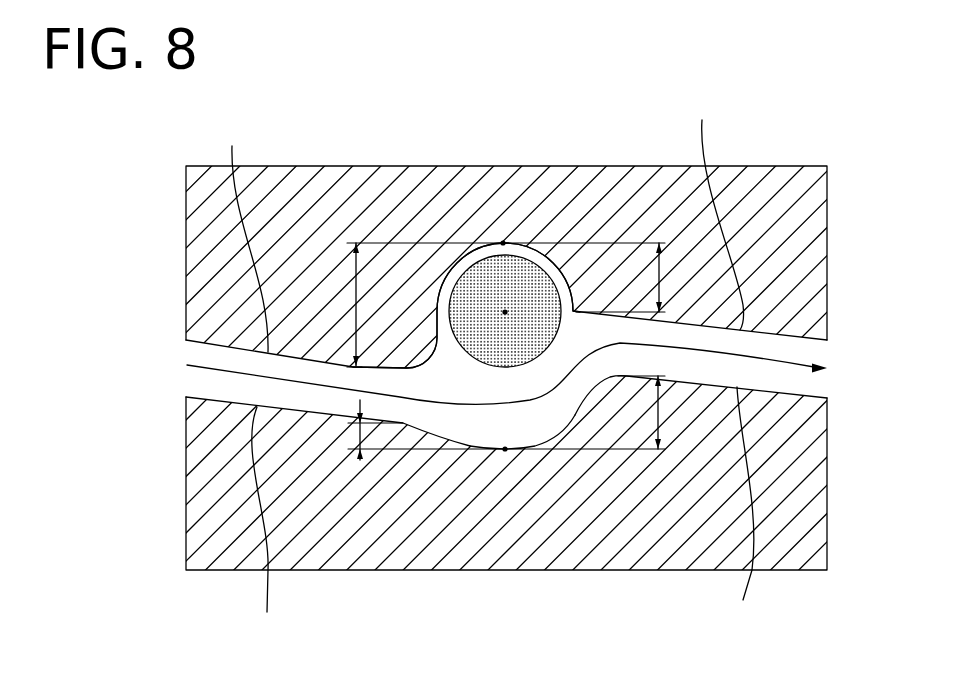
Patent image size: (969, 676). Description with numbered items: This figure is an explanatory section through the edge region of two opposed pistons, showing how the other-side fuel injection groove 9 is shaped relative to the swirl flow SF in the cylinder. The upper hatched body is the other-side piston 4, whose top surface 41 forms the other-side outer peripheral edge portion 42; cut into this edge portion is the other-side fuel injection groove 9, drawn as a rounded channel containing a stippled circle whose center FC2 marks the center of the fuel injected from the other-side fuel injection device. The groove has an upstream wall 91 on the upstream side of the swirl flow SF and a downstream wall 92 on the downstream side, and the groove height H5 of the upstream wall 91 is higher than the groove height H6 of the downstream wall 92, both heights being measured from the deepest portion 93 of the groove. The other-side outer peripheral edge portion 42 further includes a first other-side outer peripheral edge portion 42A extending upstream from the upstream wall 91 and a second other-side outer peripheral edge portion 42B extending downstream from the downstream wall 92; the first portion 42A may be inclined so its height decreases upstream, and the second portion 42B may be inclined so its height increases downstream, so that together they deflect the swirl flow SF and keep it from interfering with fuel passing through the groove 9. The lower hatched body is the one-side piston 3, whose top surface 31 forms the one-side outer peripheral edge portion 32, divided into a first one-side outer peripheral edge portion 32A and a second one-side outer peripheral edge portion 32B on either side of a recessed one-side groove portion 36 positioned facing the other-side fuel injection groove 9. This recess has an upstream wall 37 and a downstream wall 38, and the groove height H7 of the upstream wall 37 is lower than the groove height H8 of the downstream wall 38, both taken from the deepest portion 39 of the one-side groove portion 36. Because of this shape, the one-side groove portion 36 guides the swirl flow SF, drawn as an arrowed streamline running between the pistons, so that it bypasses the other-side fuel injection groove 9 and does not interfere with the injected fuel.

The one-side piston 3 is at (487, 497).
The top surface 31 is at (487, 492).
The one-side outer peripheral edge portion 32 is at (487, 492).
The first one-side outer peripheral edge portion 32A is at (741, 508).
The second one-side outer peripheral edge portion 32B is at (264, 526).
The other-side piston 4 is at (484, 241).
The top surface 41 is at (484, 243).
The other-side outer peripheral edge portion 42 is at (484, 243).
The first other-side outer peripheral edge portion 42A is at (236, 235).
The second other-side outer peripheral edge portion 42B is at (711, 211).
The other-side fuel injection groove 9 is at (506, 254).
The upstream wall 91 is at (428, 307).
The downstream wall 92 is at (573, 294).
The deepest portion 93 is at (503, 242).
The one-side groove portion 36 is at (547, 443).
The upstream wall 37 is at (442, 435).
The downstream wall 38 is at (575, 417).
The deepest portion 39 is at (505, 449).
The swirl flow SF is at (198, 367).
The center of the fuel FC2 is at (505, 313).
The groove height H5 is at (338, 304).
The groove height H6 is at (678, 277).
The groove height H7 is at (334, 430).
The groove height H8 is at (639, 412).